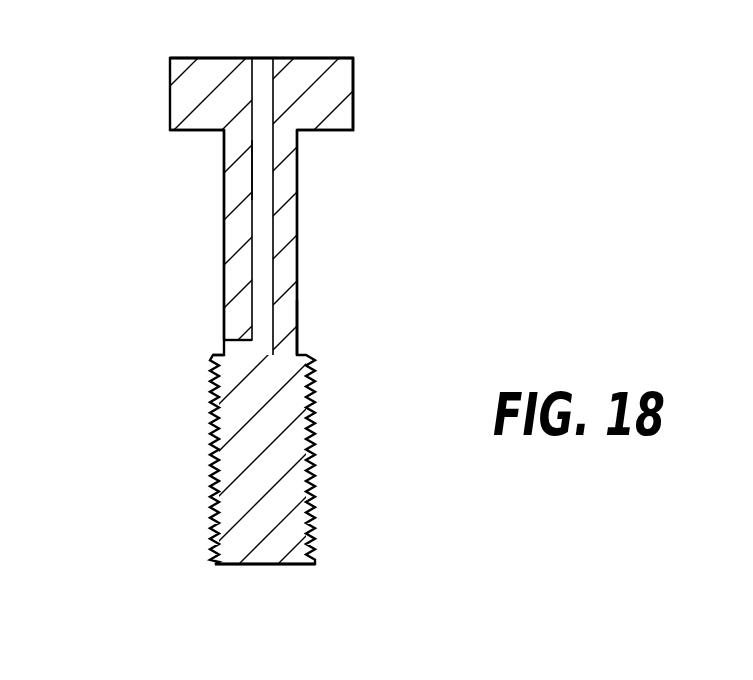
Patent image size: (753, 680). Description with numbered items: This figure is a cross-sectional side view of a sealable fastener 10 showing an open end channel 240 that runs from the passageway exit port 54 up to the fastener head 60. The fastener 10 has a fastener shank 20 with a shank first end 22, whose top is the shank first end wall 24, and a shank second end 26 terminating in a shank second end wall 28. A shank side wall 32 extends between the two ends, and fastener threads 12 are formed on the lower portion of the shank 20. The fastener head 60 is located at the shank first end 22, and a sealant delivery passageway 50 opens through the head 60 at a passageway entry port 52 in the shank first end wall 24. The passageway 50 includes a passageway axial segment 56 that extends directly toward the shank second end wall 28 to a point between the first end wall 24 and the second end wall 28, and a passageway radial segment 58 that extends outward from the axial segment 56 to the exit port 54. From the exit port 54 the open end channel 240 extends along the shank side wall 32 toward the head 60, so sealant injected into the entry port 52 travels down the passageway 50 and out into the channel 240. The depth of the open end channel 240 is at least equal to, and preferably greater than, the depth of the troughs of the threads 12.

The sealable fastener 10 is at (112, 284).
The fastener threads 12 is at (310, 440).
The fastener shank 20 is at (298, 270).
The shank first end 22 is at (353, 118).
The shank first end wall 24 is at (207, 58).
The shank second end 26 is at (213, 548).
The shank second end wall 28 is at (53, 0).
The shank side wall 32 is at (298, 320).
The sealant delivery passageway 50 is at (253, 221).
The passageway entry port 52 is at (263, 60).
The passageway exit port 54 is at (222, 348).
The passageway axial segment 56 is at (258, 158).
The passageway radial segment 58 is at (238, 335).
The fastener head 60 is at (354, 78).
The open end channel 240 is at (225, 240).